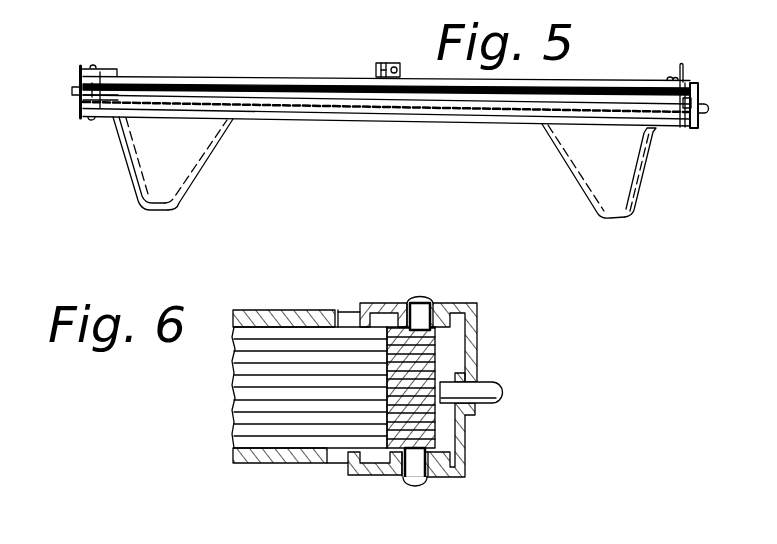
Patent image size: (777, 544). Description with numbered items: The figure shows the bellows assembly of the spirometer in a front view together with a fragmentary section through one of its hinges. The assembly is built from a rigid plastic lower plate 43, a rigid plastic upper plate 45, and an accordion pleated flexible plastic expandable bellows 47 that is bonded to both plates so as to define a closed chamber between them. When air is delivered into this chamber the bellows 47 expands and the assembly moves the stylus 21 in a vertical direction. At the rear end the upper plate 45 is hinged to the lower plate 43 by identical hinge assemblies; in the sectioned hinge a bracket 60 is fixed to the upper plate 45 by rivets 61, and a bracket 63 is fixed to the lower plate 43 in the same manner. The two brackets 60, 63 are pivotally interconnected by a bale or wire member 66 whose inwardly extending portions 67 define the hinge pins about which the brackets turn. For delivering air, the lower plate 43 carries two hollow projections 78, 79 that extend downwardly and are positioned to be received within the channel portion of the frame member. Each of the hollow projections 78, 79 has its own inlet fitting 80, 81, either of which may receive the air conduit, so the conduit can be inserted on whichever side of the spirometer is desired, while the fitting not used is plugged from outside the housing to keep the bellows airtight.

In FIG. 5, the stylus 21 is at (392, 56).
In FIG. 5, the lower plate 43 is at (398, 124).
In FIG. 6, the lower plate 43 is at (286, 465).
In FIG. 5, the upper plate 45 is at (325, 78).
In FIG. 6, the upper plate 45 is at (295, 310).
In FIG. 5, the bellows 47 is at (148, 82).
In FIG. 6, the bellows 47 is at (260, 393).
In FIG. 6, the bracket 60 is at (472, 303).
In FIG. 6, the rivets 61 is at (420, 302).
In FIG. 6, the bracket 63 is at (465, 457).
In FIG. 5, the bale or wire member 66 is at (688, 130).
In FIG. 6, the bale or wire member 66 is at (503, 389).
In FIG. 5, the inwardly extending portions 67 is at (708, 108).
In FIG. 6, the inwardly extending portions 67 is at (470, 390).
In FIG. 5, the hollow projection 78 is at (180, 170).
In FIG. 5, the hollow projection 79 is at (617, 209).
In FIG. 5, the inlet fitting 80 is at (122, 172).
In FIG. 5, the inlet fitting 81 is at (643, 185).